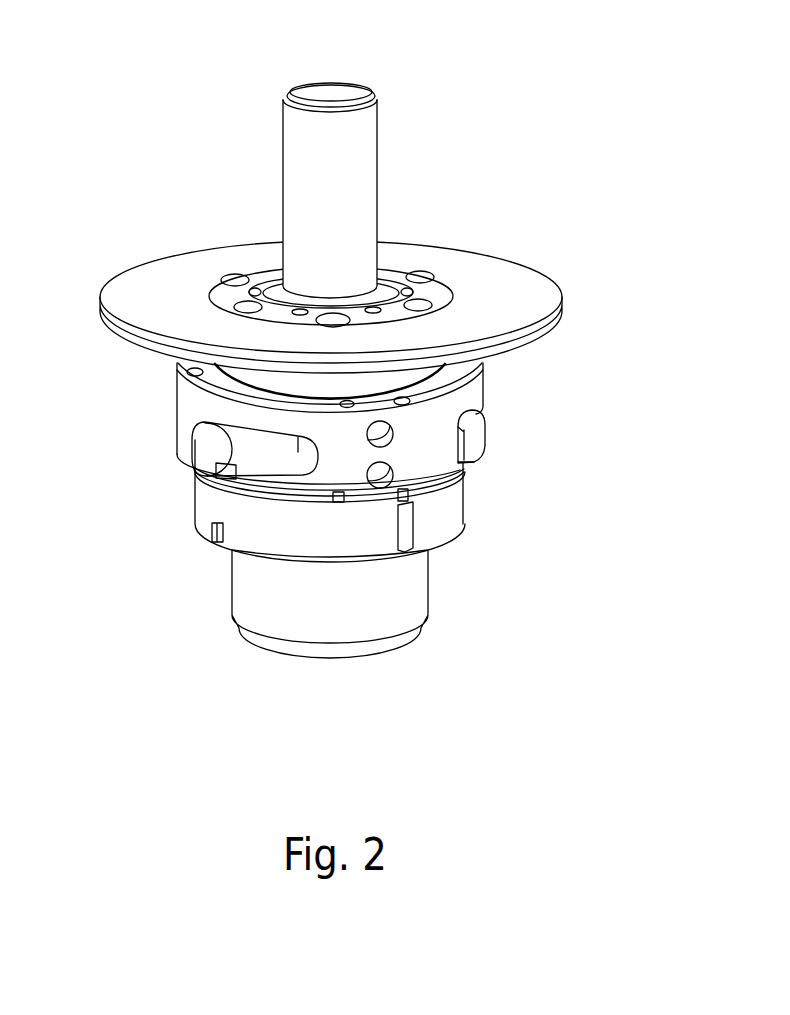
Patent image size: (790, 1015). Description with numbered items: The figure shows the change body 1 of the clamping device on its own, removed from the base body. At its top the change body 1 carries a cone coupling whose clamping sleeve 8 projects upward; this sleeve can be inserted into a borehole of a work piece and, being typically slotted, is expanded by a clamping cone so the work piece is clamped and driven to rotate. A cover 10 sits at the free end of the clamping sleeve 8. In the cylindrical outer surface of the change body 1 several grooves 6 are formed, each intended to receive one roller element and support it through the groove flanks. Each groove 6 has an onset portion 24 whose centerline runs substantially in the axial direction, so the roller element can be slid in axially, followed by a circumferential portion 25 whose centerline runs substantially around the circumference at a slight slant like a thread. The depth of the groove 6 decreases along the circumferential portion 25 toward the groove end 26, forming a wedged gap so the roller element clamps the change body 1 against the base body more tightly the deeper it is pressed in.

The change body 1 is at (502, 403).
The groove 6 is at (237, 458).
The clamping sleeve 8 is at (350, 165).
The cover 10 is at (329, 92).
The onset portion of groove 24 is at (207, 457).
The circumferential portion of groove 25 is at (268, 458).
The groove end 26 is at (298, 438).